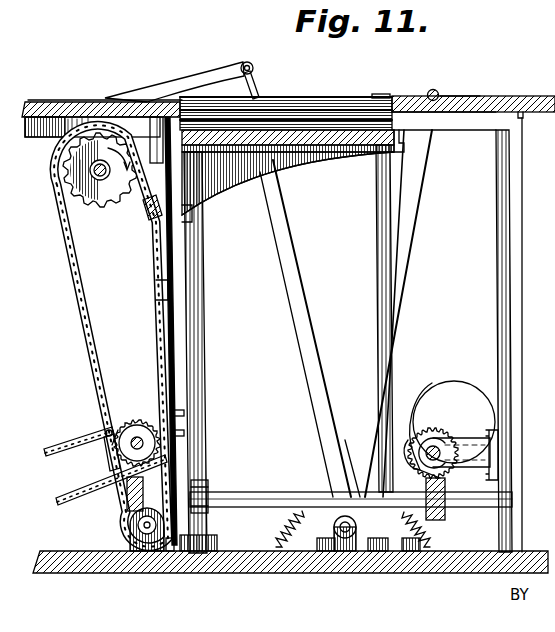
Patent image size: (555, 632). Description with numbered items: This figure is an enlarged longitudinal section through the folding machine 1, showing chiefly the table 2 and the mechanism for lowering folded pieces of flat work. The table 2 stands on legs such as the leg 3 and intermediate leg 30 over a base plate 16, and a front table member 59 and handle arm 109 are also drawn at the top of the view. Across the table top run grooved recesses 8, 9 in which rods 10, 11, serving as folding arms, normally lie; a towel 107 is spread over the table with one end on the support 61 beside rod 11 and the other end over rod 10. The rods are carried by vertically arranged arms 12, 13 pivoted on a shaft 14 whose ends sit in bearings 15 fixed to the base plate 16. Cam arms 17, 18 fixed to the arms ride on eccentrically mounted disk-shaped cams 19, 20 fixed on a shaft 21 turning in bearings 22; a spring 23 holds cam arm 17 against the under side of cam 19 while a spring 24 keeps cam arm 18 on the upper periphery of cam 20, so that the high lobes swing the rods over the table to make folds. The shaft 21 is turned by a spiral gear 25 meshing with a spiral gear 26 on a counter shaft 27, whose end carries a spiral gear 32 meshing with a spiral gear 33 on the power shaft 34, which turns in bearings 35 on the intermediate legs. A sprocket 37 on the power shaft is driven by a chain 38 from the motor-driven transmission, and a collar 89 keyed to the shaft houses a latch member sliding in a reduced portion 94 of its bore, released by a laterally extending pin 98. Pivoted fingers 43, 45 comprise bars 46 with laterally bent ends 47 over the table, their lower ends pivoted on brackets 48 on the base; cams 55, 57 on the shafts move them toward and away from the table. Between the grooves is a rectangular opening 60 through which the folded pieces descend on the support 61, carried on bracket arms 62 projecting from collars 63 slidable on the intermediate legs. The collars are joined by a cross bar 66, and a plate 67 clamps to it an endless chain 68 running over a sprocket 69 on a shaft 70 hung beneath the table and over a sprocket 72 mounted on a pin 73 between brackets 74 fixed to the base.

The folding machine 1 is at (107, 98).
The table 2 is at (515, 98).
The leg 3 is at (522, 208).
The grooved recess 8 is at (150, 101).
The grooved recess 9 is at (448, 95).
The rod 10 is at (256, 68).
The rod 11 is at (437, 90).
The arm 12 is at (283, 223).
The arm 13 is at (418, 200).
The shaft 14 is at (334, 527).
The bearing 15 is at (325, 553).
The base plate 16 is at (538, 551).
The cam arm 17 is at (376, 553).
The cam arm 18 is at (432, 402).
The cam 19 is at (488, 412).
The cam 20 is at (500, 460).
The shaft 21 is at (446, 446).
The bearing 22 is at (492, 442).
The spring 23 is at (273, 542).
The spring 24 is at (416, 555).
The spiral gear 25 is at (448, 508).
The spiral gear 26 is at (438, 518).
The counter shaft 27 is at (300, 492).
The intermediate leg 30 is at (158, 295).
The spiral gear 32 is at (128, 518).
The spiral gear 33 is at (143, 425).
The power shaft 34 is at (118, 430).
The bearing 35 is at (176, 413).
The sprocket 37 is at (106, 455).
The chain 38 is at (58, 446).
The pivoted finger 43 is at (204, 340).
The pivoted finger 45 is at (403, 263).
The bar 46 is at (384, 245).
The laterally bent end 47 is at (385, 94).
The bracket 48 is at (212, 553).
The cam 55 is at (208, 490).
The cam 57 is at (356, 440).
The front table bar 59 is at (42, 128).
The opening 60 is at (398, 96).
The support 61 is at (402, 146).
The bracket arm 62 is at (268, 157).
The collar 63 is at (206, 192).
The cross bar 66 is at (192, 216).
The plate 67 is at (147, 210).
The endless chain 68 is at (66, 236).
The sprocket 69 is at (80, 186).
The shaft 70 is at (92, 167).
The sprocket 72 is at (136, 553).
The pin 73 is at (168, 553).
The bracket 74 is at (150, 553).
The collar 89 is at (176, 433).
The reduced portion of the bore 94 is at (112, 478).
The pin 98 is at (106, 431).
The towel 107 is at (332, 97).
The handle arm 109 is at (200, 72).